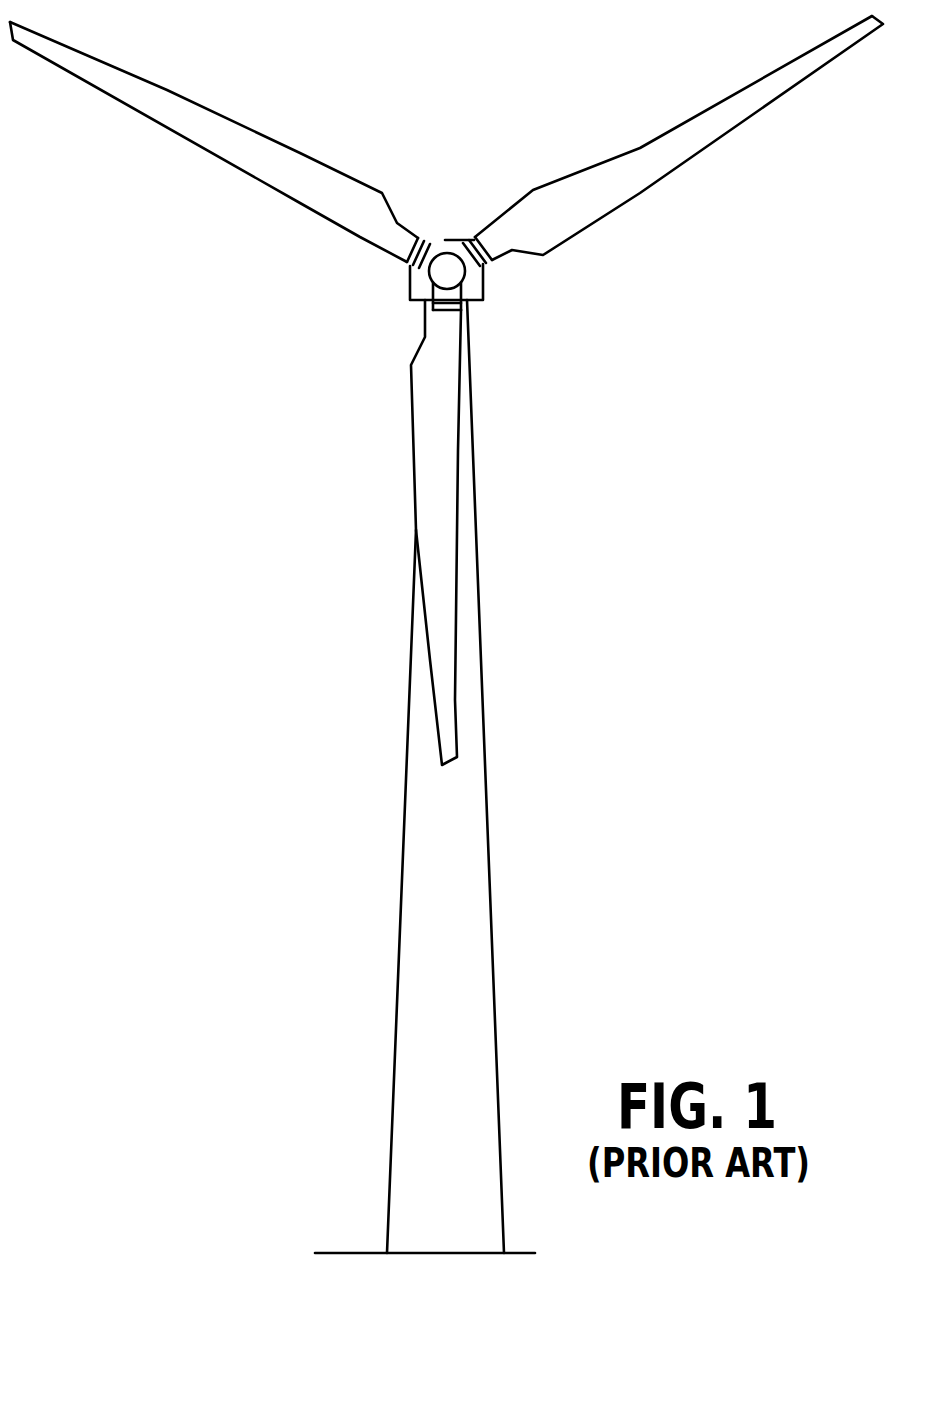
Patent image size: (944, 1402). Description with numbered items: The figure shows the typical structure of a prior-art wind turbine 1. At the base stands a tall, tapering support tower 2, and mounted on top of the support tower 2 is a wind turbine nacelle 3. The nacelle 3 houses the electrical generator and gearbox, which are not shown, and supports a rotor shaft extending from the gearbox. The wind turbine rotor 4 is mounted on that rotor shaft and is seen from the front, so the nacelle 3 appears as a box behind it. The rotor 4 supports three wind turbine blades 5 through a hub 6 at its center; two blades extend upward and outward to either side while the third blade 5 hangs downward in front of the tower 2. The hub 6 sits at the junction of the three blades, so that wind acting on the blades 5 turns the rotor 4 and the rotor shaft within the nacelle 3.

The wind turbine 1 is at (312, 1122).
The support tower 2 is at (462, 872).
The wind turbine nacelle 3 is at (483, 302).
The wind turbine rotor 4 is at (308, 280).
The wind turbine blades 5 is at (442, 578).
The hub 6 is at (455, 275).